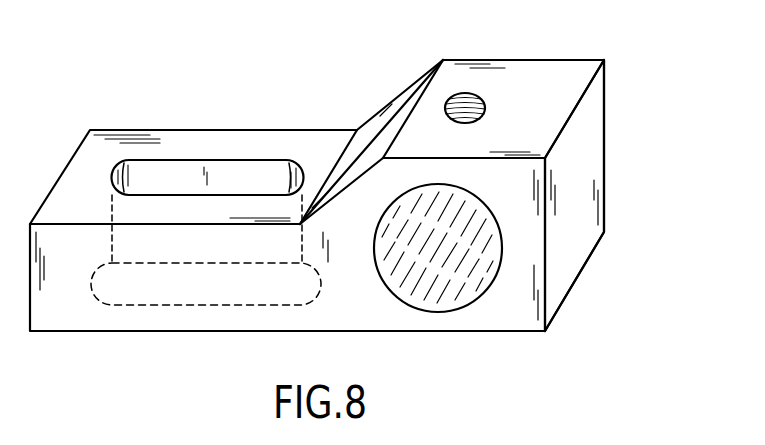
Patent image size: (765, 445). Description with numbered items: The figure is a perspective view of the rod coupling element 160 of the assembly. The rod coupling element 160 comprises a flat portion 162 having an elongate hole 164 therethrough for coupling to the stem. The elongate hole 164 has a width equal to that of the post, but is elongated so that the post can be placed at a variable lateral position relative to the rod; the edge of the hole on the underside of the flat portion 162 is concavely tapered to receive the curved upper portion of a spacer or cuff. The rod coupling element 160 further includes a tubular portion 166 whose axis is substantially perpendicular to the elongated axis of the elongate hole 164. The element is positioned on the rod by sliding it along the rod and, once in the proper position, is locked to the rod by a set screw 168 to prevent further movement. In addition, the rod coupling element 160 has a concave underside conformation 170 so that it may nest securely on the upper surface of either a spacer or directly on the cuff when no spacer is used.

The rod coupling element 160 is at (165, 116).
The flat portion 162 is at (327, 142).
The elongate hole 164 is at (268, 188).
The tubular portion 166 is at (560, 107).
The set screw 168 is at (481, 100).
The concave underside conformation 170 is at (148, 312).